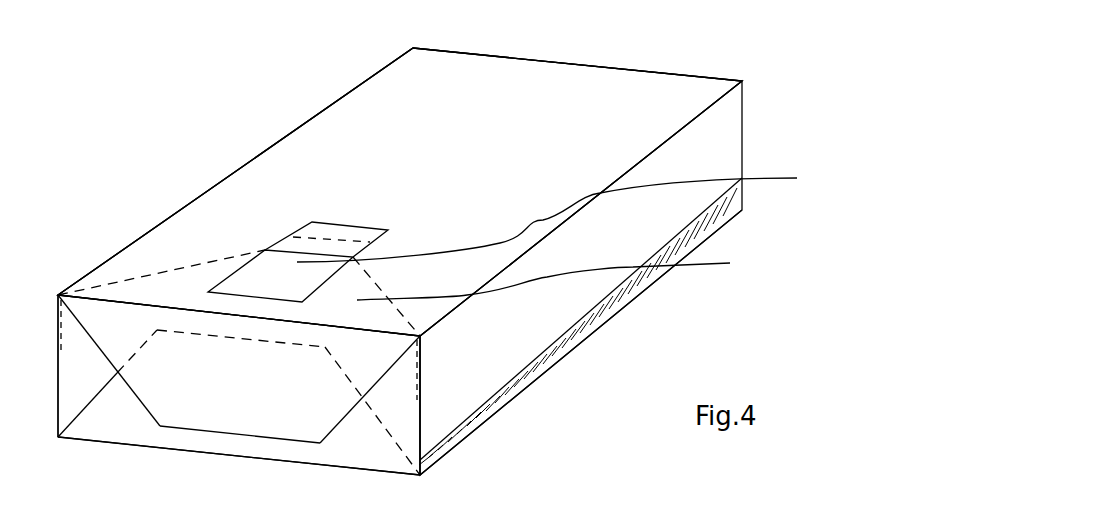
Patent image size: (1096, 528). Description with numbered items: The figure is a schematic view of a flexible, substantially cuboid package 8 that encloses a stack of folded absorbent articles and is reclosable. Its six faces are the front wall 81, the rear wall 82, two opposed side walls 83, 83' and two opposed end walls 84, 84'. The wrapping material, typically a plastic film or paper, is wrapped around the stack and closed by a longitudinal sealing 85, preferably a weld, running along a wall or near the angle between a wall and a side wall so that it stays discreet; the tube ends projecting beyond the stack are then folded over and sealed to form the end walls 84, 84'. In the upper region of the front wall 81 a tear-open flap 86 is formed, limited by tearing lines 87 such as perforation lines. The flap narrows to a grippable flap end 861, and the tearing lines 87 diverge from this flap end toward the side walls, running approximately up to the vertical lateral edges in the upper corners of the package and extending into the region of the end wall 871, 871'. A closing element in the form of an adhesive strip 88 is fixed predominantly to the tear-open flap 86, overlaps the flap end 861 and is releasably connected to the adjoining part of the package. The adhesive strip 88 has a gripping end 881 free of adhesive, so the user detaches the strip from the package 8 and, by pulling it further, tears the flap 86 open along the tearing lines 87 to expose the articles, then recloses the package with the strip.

The package 8 is at (675, 60).
The front wall 81 is at (430, 126).
The rear wall 82 is at (360, 468).
The side wall 83 is at (624, 275).
The side wall 83' is at (235, 171).
The end wall 84 is at (239, 384).
The end wall 84' is at (577, 40).
The sealing 85 is at (588, 320).
The tear-open flap 86 is at (562, 274).
The flap end 861 is at (573, 213).
The tearing line 87 is at (173, 268).
The end wall region 871 is at (113, 404).
The end wall region 871' is at (490, 429).
The adhesive strip 88 is at (293, 240).
The gripping end 881 is at (333, 227).